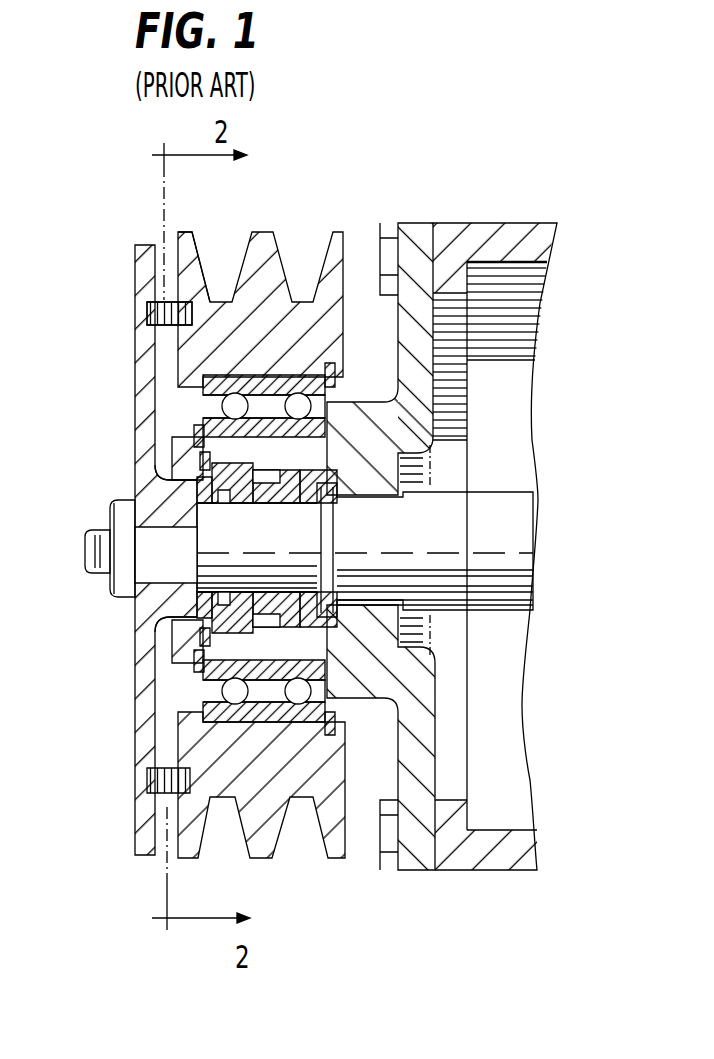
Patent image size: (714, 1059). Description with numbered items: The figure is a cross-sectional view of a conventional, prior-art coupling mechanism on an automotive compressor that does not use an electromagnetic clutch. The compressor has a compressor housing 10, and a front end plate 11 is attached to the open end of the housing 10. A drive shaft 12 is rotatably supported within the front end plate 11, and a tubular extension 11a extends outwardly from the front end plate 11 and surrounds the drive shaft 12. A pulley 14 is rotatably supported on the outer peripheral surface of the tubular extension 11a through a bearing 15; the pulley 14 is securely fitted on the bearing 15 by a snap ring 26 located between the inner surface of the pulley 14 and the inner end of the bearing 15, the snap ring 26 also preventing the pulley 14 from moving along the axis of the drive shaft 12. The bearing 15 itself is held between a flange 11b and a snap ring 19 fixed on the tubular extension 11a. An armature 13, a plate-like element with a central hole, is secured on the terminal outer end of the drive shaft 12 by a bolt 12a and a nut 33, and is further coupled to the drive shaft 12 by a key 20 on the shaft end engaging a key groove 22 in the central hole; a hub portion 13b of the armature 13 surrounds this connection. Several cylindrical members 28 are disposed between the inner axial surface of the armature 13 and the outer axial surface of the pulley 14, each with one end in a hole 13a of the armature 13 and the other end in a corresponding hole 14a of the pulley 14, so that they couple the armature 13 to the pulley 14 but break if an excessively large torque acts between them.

The compressor housing 10 is at (497, 240).
The front end plate 11 is at (413, 243).
The tubular extension 11a is at (183, 648).
The flange 11b is at (337, 422).
The drive shaft 12 is at (516, 566).
The bolt 12a is at (82, 548).
The armature 13 is at (130, 732).
The holes 13a is at (148, 303).
The plate hub 13b is at (178, 602).
The pulley 14 is at (341, 233).
The holes 14a is at (204, 235).
The bearing 15 is at (203, 402).
The snap ring 19 is at (192, 428).
The key 20 is at (151, 522).
The key groove 22 is at (112, 512).
The snap ring 26 is at (340, 368).
The cylindrical members 28 is at (152, 302).
The nut 33 is at (125, 565).